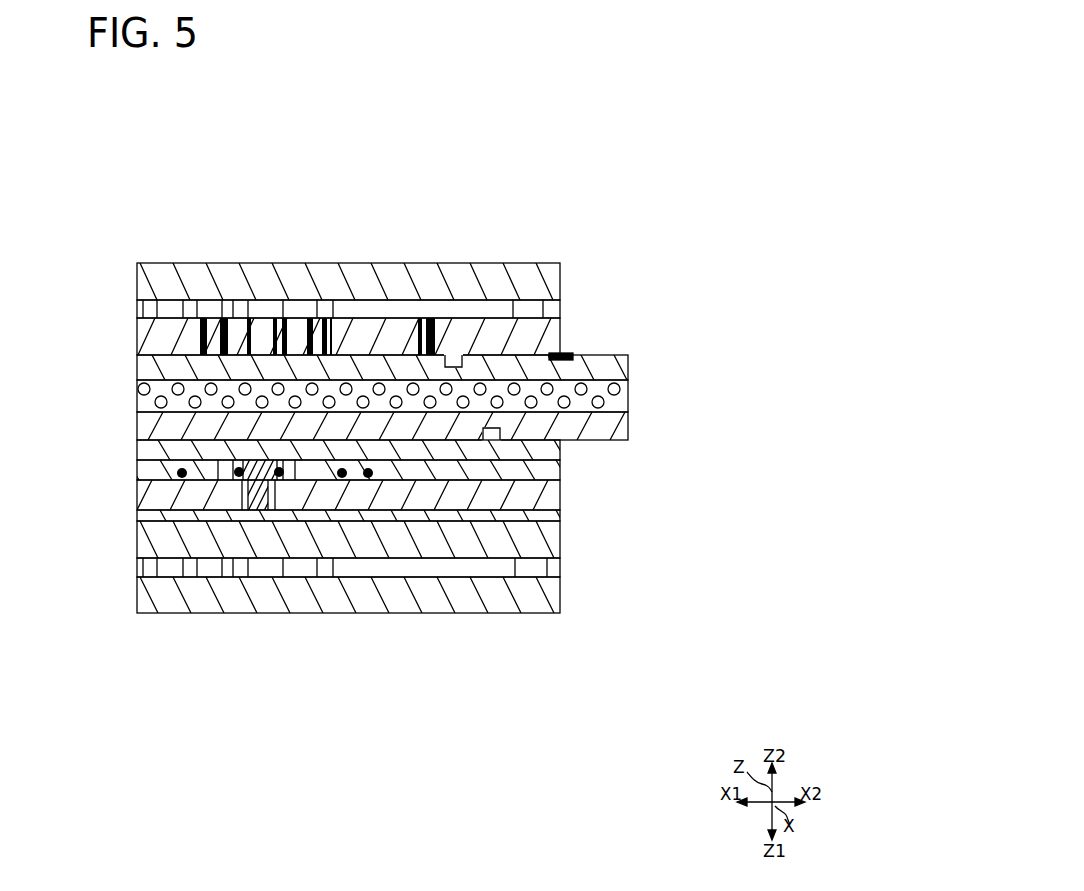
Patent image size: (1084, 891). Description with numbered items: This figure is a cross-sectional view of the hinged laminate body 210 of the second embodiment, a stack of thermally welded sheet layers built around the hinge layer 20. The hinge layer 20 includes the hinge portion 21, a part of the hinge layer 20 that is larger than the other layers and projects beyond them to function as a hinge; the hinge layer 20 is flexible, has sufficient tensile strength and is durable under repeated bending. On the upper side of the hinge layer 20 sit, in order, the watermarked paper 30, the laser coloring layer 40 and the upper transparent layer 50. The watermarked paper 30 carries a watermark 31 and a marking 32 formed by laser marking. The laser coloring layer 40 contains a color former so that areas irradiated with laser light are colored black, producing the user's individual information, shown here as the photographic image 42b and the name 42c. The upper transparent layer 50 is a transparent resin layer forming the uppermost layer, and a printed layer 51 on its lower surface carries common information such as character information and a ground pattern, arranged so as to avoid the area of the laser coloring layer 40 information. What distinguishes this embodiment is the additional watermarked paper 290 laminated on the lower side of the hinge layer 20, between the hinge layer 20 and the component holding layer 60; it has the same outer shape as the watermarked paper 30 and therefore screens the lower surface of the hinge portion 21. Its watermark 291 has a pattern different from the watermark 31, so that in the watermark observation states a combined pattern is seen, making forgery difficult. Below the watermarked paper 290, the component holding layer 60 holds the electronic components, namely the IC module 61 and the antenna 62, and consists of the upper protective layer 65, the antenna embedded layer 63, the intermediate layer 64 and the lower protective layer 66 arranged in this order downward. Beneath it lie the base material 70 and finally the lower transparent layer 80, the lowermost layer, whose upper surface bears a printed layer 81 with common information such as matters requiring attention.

The hinged laminate body 210 is at (656, 137).
The upper transparent layer 50 is at (560, 281).
The printed layer 51 is at (560, 309).
The laser coloring layer 40 is at (528, 291).
The photographic image 42b is at (295, 320).
The name 42c is at (418, 322).
The watermarked paper 30 is at (508, 265).
The watermark 31 is at (449, 355).
The marking 32 is at (547, 353).
The hinge layer 20 is at (507, 408).
The hinge portion 21 is at (622, 403).
The watermarked paper 290 is at (516, 552).
The watermark 291 is at (494, 432).
The component holding layer 60 is at (462, 487).
The upper protective layer 65 is at (560, 452).
The antenna embedded layer 63 is at (350, 465).
The intermediate layer 64 is at (560, 495).
The lower protective layer 66 is at (560, 517).
The antenna 62 is at (182, 473).
The IC module 61 is at (232, 495).
The base material 70 is at (560, 548).
The printed layer 81 is at (560, 566).
The lower transparent layer 80 is at (560, 600).